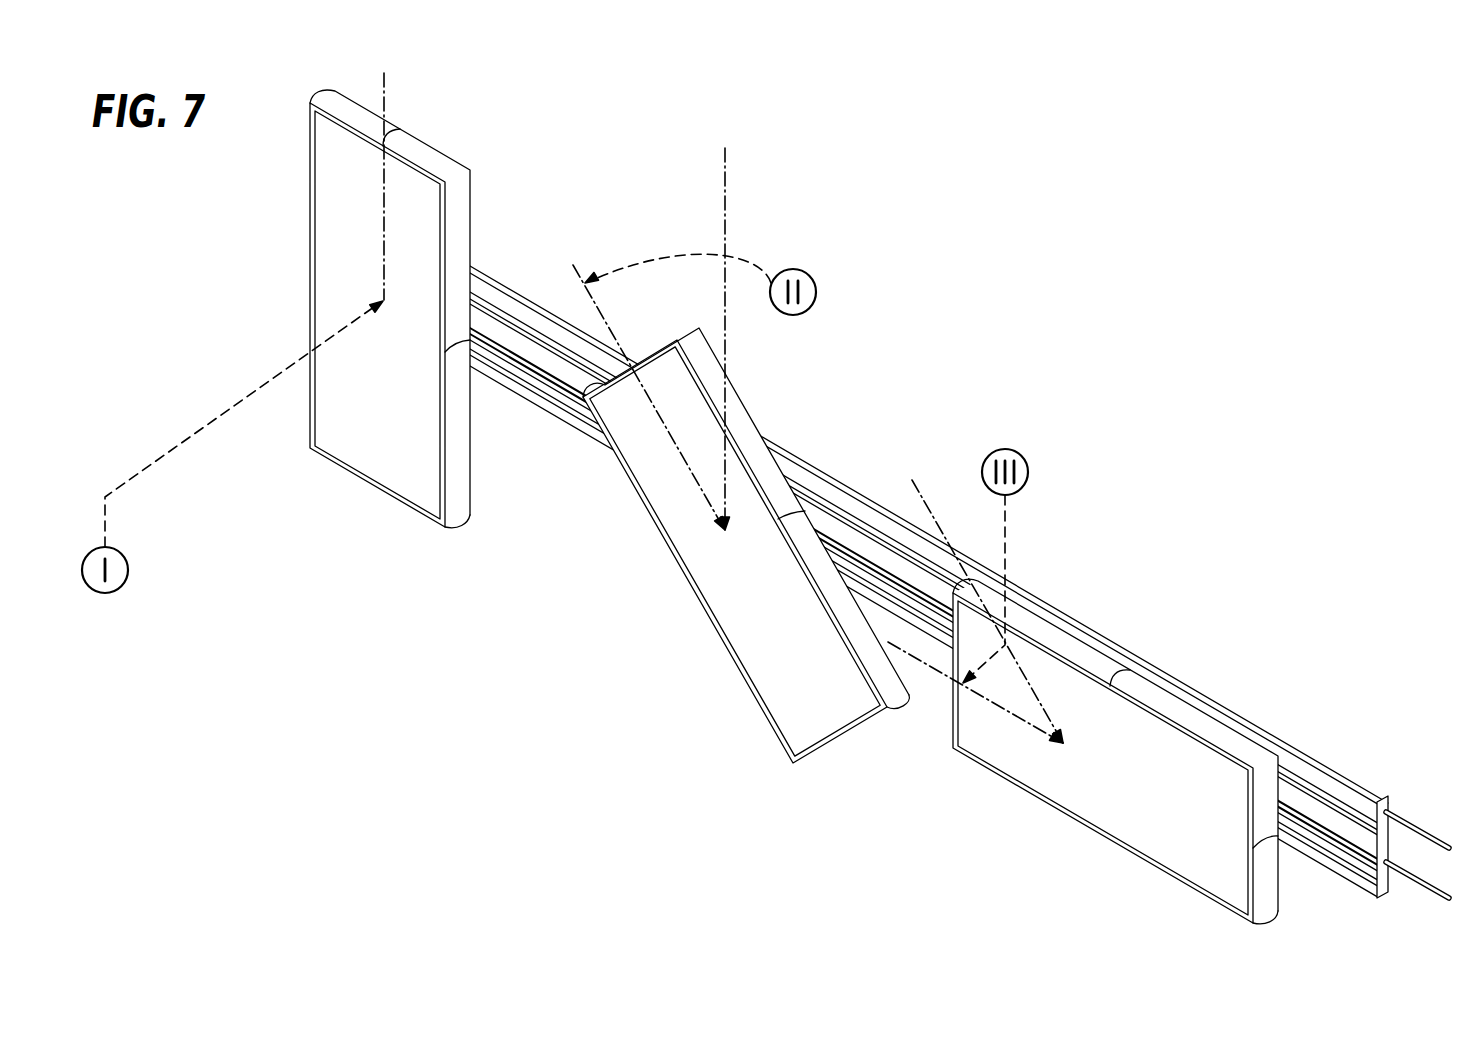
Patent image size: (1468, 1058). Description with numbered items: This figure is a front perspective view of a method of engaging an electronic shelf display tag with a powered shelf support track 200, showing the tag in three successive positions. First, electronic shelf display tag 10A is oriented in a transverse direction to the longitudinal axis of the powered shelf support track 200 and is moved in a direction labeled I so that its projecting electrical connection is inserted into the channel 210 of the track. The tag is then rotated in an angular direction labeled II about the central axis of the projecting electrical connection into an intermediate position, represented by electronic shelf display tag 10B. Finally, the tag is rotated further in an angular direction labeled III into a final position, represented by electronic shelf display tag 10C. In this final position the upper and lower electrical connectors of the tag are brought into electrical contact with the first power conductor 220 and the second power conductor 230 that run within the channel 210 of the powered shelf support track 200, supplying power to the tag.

The electronic shelf display tag 10A is at (390, 309).
The electronic shelf display tag 10B is at (746, 545).
The electronic shelf display tag 10C is at (1115, 751).
The powered shelf support track 200 is at (929, 572).
The channel 210 is at (518, 340).
The first power conductor 220 is at (1438, 840).
The second power conductor 230 is at (1436, 893).